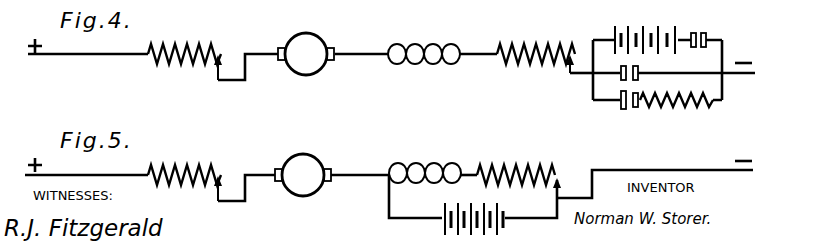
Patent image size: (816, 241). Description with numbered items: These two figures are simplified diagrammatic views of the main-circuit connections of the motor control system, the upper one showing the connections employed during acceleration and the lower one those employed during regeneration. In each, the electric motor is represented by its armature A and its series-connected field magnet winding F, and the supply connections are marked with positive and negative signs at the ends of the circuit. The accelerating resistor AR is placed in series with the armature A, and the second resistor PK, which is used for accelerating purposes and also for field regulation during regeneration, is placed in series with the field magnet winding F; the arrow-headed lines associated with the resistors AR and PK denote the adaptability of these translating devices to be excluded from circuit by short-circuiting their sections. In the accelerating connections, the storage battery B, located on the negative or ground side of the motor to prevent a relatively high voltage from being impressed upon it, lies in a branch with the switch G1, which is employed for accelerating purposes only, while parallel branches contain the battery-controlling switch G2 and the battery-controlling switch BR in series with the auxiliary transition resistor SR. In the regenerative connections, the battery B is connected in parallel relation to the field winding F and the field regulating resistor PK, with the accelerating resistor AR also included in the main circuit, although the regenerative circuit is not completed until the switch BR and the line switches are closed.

In FIG. 4, the accelerating resistor AR is at (185, 52).
In FIG. 5, the accelerating resistor AR is at (185, 172).
In FIG. 4, the armature A is at (306, 54).
In FIG. 5, the armature A is at (303, 175).
In FIG. 4, the field magnet winding F is at (424, 40).
In FIG. 5, the field magnet winding F is at (425, 159).
In FIG. 4, the second resistor PK is at (536, 45).
In FIG. 5, the second resistor PK is at (519, 163).
In FIG. 4, the storage battery B is at (645, 28).
In FIG. 5, the storage battery B is at (474, 222).
In FIG. 4, the switch G1 is at (703, 33).
In FIG. 4, the battery-controlling switch G2 is at (644, 69).
In FIG. 4, the battery-controlling switch BR is at (633, 104).
In FIG. 4, the auxiliary transition resistor SR is at (676, 113).